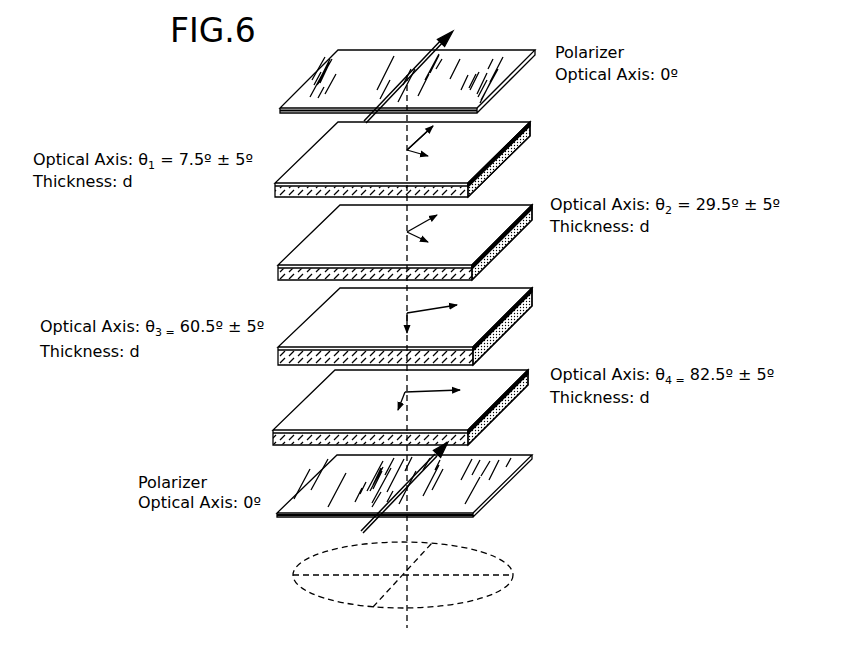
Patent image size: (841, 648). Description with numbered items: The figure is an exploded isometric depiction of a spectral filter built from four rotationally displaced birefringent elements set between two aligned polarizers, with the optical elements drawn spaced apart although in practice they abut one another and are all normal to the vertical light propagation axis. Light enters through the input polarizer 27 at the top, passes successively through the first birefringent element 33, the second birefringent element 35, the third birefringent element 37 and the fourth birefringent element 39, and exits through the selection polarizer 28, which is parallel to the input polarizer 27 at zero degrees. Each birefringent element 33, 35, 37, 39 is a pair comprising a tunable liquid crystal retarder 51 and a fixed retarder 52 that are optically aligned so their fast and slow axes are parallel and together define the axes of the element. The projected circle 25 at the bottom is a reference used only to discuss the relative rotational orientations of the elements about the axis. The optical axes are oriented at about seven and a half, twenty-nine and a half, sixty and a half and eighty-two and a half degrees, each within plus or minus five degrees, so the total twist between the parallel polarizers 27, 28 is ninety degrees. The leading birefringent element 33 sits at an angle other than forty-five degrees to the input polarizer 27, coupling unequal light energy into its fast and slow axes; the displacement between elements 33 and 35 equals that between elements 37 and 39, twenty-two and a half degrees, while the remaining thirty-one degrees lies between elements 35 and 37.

The projected circle 25 is at (485, 598).
The input polarizer 27 is at (314, 98).
The selection polarizer 28 is at (500, 480).
The first birefringent element 33 is at (541, 122).
The second birefringent element 35 is at (268, 273).
The third birefringent element 37 is at (553, 297).
The fourth birefringent element 39 is at (270, 418).
The tunable liquid crystal retarder 51 is at (326, 144).
The fixed retarder 52 is at (305, 194).